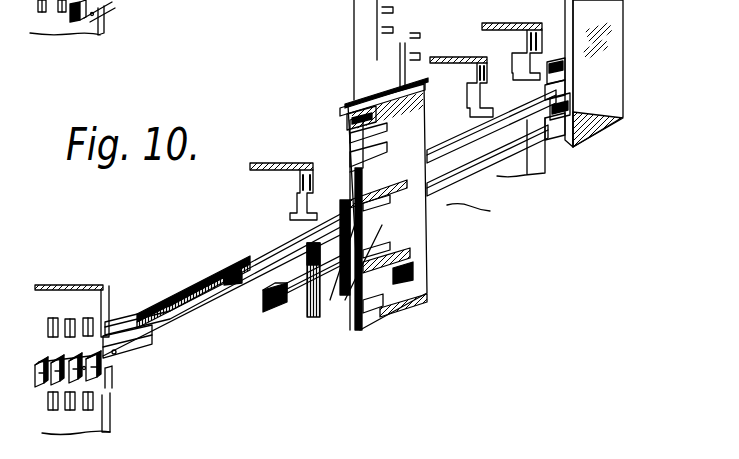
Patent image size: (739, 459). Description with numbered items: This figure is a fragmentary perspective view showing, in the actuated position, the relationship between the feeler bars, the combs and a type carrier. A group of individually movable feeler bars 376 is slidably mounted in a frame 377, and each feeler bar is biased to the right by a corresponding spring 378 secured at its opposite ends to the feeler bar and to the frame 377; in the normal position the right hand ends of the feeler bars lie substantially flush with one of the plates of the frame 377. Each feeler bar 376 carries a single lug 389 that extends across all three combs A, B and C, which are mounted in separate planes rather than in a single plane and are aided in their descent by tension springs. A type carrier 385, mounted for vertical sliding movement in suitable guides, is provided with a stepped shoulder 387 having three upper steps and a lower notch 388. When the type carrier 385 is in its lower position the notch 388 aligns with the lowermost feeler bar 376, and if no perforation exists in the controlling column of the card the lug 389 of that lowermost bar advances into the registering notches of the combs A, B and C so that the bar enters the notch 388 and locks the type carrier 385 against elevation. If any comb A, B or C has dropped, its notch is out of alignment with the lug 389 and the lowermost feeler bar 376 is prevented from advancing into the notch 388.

The feeler bar 376 is at (275, 307).
The frame 377 is at (100, 25).
The spring 378 is at (272, 238).
The type carrier 385 is at (622, 78).
The stepped shoulder 387 is at (565, 105).
The lower notch 388 is at (557, 122).
The lug 389 is at (382, 225).
The comb A is at (350, 120).
The comb B is at (417, 232).
The comb C is at (367, 103).